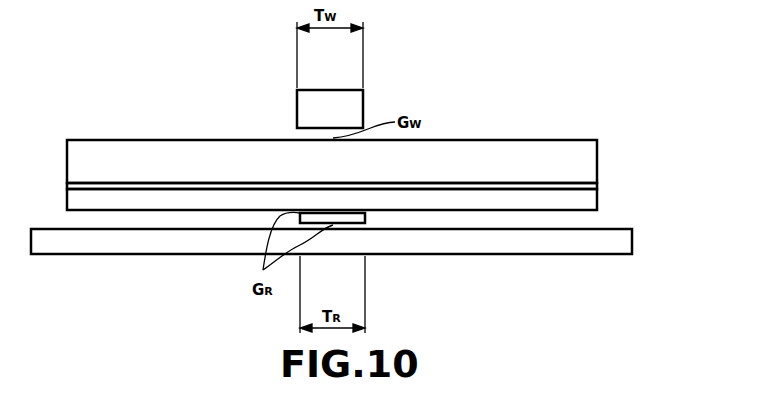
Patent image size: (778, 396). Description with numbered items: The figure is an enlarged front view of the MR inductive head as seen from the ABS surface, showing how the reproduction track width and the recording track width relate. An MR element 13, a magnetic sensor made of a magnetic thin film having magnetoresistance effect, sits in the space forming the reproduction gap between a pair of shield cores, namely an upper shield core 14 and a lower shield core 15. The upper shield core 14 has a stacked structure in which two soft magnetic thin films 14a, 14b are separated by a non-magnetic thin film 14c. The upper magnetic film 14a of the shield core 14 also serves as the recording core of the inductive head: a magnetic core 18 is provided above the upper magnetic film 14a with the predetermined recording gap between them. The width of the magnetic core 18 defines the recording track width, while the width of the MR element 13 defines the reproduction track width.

The MR element 13 is at (345, 220).
The upper shield core 14 is at (387, 170).
The upper magnetic film 14a is at (597, 152).
The soft magnetic thin film 14b is at (597, 186).
The non-magnetic thin film 14c is at (597, 198).
The lower shield core 15 is at (630, 246).
The magnetic core 18 is at (358, 105).